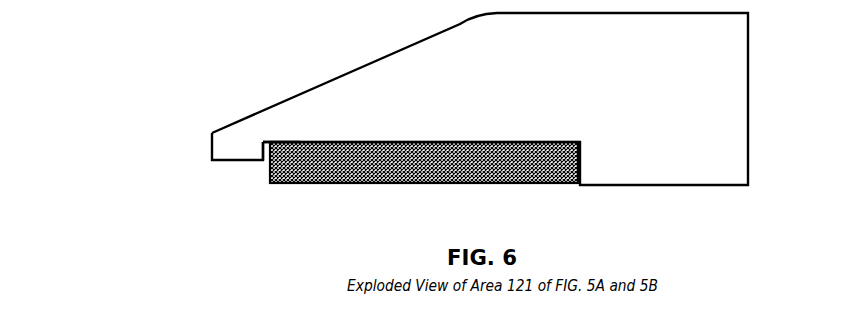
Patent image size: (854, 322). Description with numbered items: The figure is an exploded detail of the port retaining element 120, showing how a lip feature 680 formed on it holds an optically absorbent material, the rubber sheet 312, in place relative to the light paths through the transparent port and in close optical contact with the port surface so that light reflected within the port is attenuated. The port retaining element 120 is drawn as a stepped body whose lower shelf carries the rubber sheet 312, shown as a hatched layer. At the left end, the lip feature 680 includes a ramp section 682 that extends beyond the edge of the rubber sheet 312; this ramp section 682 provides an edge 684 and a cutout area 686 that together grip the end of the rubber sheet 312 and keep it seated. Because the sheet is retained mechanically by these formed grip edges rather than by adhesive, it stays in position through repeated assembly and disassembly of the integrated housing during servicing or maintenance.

The port retaining element 120 is at (668, 70).
The rubber sheet 312 is at (432, 183).
The lip feature 680 is at (193, 116).
The ramp section 682 is at (237, 145).
The edge 684 is at (260, 162).
The cutout area 686 is at (297, 142).